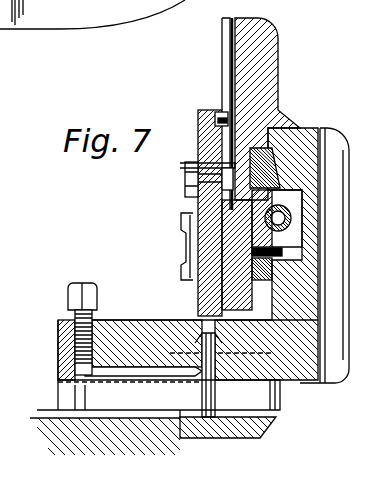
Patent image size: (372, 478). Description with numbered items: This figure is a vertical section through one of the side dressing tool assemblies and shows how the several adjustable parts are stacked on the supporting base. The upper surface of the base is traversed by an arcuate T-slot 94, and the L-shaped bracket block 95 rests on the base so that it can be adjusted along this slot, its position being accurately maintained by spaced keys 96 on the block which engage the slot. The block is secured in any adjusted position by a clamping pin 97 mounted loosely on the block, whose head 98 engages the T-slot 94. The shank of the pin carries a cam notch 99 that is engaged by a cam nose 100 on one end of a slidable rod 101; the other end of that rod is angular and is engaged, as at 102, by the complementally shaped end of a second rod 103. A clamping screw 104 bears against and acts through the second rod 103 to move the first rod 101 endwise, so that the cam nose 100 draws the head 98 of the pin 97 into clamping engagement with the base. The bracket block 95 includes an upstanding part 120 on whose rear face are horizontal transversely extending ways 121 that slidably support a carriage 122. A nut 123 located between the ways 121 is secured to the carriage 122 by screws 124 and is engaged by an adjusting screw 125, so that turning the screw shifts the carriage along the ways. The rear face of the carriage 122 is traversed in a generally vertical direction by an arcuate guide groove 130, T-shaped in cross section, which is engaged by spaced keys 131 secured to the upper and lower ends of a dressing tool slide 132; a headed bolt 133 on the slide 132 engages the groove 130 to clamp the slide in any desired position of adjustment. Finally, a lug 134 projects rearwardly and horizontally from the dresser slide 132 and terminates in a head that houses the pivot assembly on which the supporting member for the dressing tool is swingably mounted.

The T-slot 94 is at (119, 416).
The bracket block 95 is at (297, 370).
The keys 96 is at (63, 398).
The clamping pin 97 is at (217, 377).
The head 98 is at (207, 417).
The cam notch 99 is at (174, 397).
The cam nose 100 is at (187, 367).
The slidable rod 101 is at (138, 366).
The angular engagement 102 is at (82, 372).
The second rod 103 is at (70, 356).
The clamping screw 104 is at (70, 318).
The upstanding part 120 is at (321, 128).
The ways 121 is at (272, 160).
The carriage 122 is at (272, 95).
The nut 123 is at (279, 192).
The screws 124 is at (218, 255).
The adjusting screw 125 is at (278, 262).
The arcuate guide groove 130 is at (232, 70).
The keys 131 is at (220, 114).
The dressing tool slide 132 is at (200, 150).
The headed bolt 133 is at (185, 178).
The lug 134 is at (184, 251).